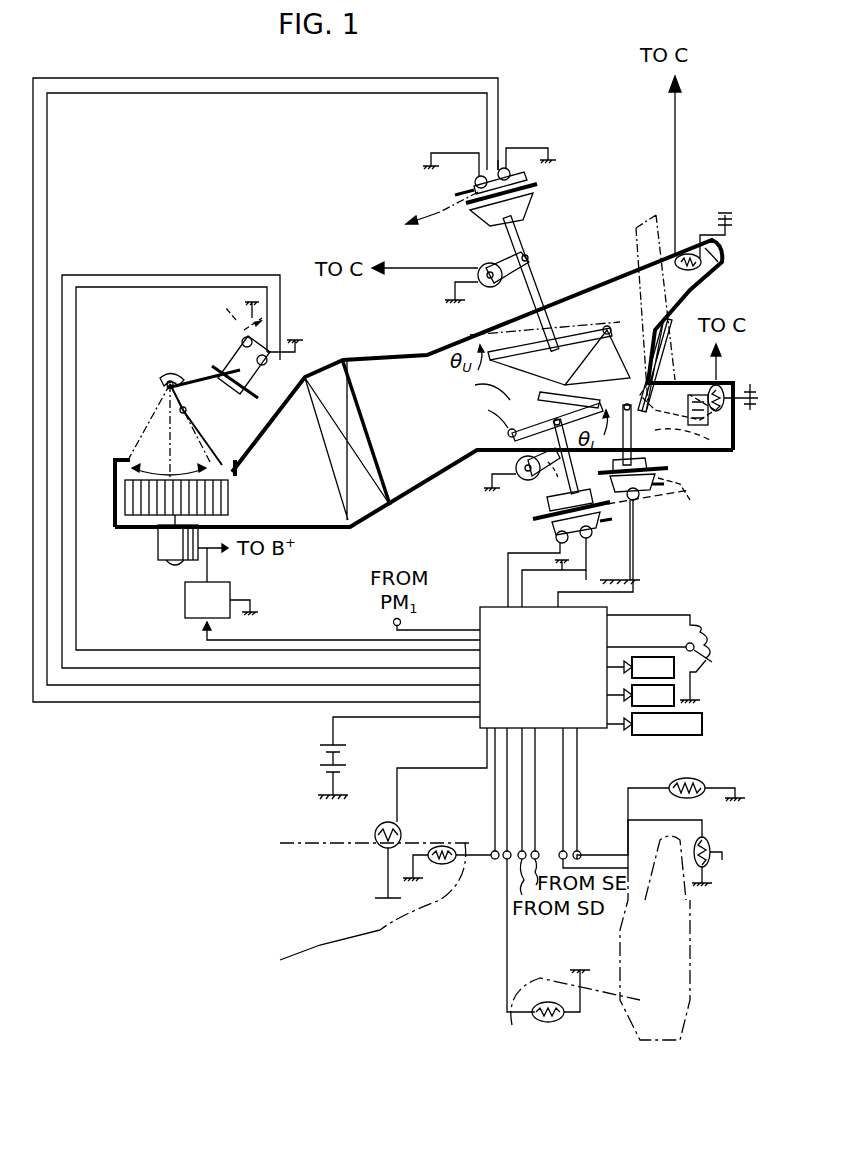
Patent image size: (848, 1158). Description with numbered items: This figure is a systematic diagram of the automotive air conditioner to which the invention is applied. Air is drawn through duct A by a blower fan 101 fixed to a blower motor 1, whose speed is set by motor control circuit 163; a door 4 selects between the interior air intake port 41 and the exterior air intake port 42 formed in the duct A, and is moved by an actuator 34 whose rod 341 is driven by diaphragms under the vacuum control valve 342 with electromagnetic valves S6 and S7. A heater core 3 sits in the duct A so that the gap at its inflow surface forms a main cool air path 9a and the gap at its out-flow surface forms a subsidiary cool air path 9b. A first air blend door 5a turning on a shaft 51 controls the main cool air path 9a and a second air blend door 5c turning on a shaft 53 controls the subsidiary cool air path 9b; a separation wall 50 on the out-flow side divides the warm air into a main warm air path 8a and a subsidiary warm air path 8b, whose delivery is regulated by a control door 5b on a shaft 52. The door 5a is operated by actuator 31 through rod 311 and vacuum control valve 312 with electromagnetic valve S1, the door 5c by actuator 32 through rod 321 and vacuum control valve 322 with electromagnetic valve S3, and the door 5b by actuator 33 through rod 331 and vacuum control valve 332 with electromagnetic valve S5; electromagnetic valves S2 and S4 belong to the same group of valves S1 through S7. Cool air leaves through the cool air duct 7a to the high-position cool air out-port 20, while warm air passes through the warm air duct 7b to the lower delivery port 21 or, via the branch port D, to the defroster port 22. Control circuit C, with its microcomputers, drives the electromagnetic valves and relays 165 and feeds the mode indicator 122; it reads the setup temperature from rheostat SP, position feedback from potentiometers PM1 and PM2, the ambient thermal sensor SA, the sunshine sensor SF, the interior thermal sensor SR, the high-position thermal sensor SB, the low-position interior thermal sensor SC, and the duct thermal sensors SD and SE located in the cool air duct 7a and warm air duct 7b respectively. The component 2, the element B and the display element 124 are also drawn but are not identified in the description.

The blower motor 1 is at (160, 544).
The blower fan 2 is at (372, 386).
The heater core 3 is at (481, 387).
The door 4 is at (208, 422).
The first air blend door 5a is at (520, 352).
The control door 5b is at (672, 400).
The second air blend door 5c is at (544, 420).
The cool air duct 7a is at (614, 272).
The warm air duct 7b is at (568, 470).
The main warm air path 8a is at (574, 392).
The subsidiary warm air path 8b is at (664, 360).
The main cool air path 9a is at (568, 306).
The subsidiary cool air path 9b is at (506, 434).
The cool air out-port 20 is at (727, 252).
The lower delivery port 21 is at (734, 428).
The defroster port 22 is at (648, 228).
The actuator 31 is at (528, 208).
The actuator 32 is at (540, 512).
The actuator 33 is at (655, 492).
The actuator 34 is at (246, 393).
The interior air intake port 41 is at (152, 405).
The exterior air intake port 42 is at (169, 455).
The separation wall 50 is at (620, 380).
The shaft 51 is at (607, 322).
The shaft 52 is at (705, 446).
The shaft 53 is at (481, 414).
The blower fan 101 is at (228, 492).
The mode indicator 122 is at (654, 724).
The indicator 124 is at (640, 695).
The motor control circuit 163 is at (221, 600).
The relays 165 is at (640, 667).
The rod 311 is at (528, 244).
The vacuum control valve 312 is at (520, 182).
The rod 321 is at (545, 490).
The vacuum control valve 322 is at (606, 530).
The rod 331 is at (660, 470).
The vacuum control valve 332 is at (665, 480).
The rod 341 is at (200, 360).
The vacuum control valve 342 is at (340, 330).
The duct A is at (385, 338).
The battery B is at (354, 758).
The control circuit C is at (548, 680).
The branch port D is at (648, 485).
The electromagnetic valve S1 is at (474, 184).
The electromagnetic valve S2 is at (504, 164).
The electromagnetic valve S3 is at (604, 556).
The electromagnetic valve S4 is at (556, 540).
The electromagnetic valve S5 is at (640, 500).
The electromagnetic valve S6 is at (240, 338).
The electromagnetic valve S7 is at (265, 370).
The feedback potentiometer PM1 is at (482, 266).
The feedback potentiometer PM2 is at (516, 458).
The ambient thermal sensor SA is at (676, 778).
The thermal sensor SB is at (448, 864).
The interior thermal sensor SC is at (560, 1020).
The thermal sensor SD is at (700, 270).
The thermal sensor SE is at (720, 386).
The sunshine sensor SF is at (376, 838).
The rheostat SP is at (708, 668).
The interior thermal sensor SR is at (696, 868).